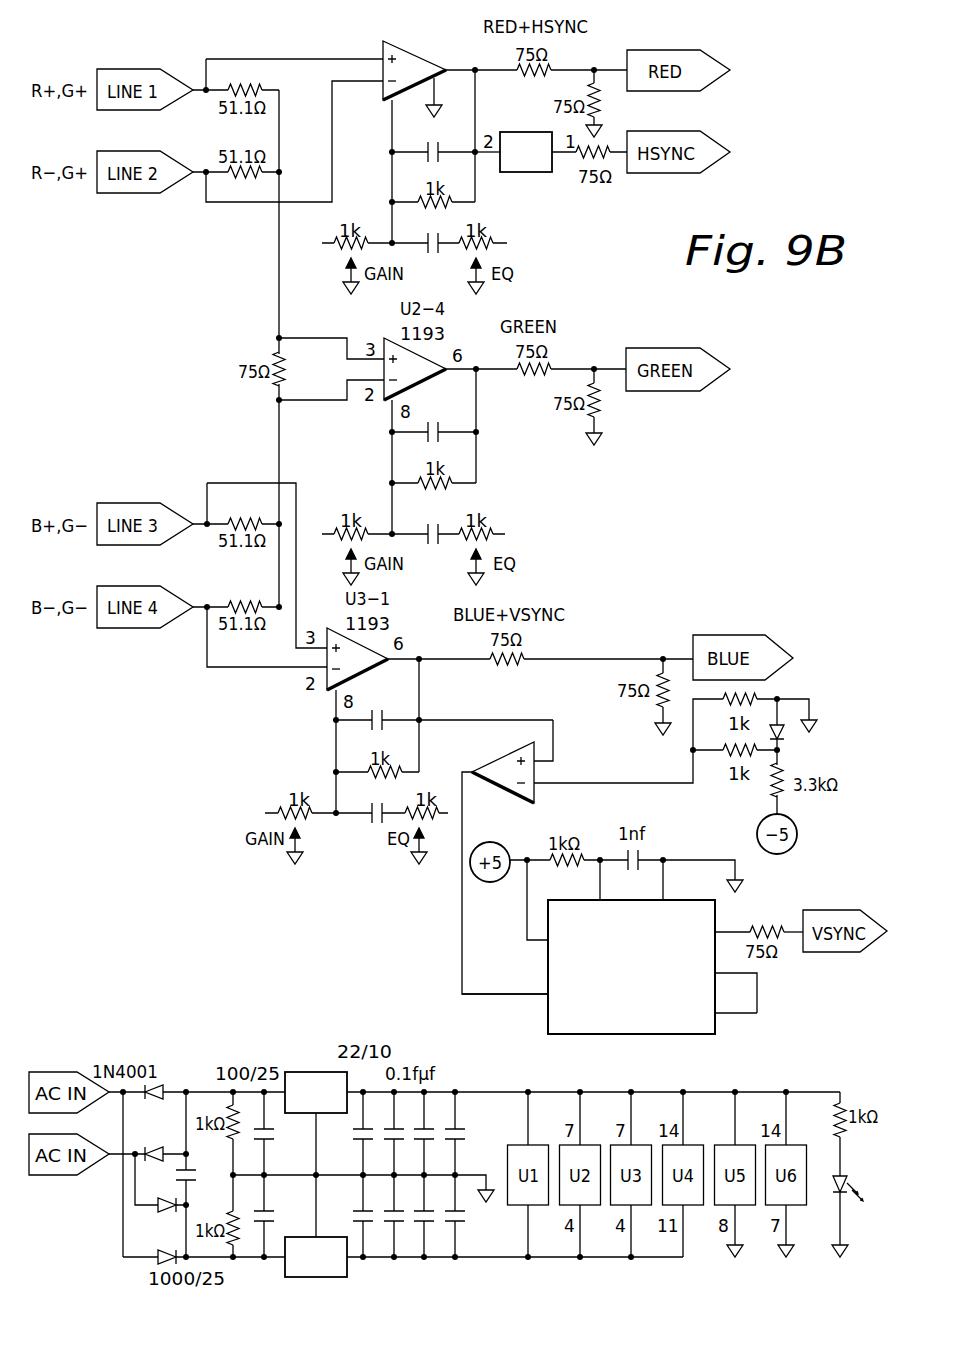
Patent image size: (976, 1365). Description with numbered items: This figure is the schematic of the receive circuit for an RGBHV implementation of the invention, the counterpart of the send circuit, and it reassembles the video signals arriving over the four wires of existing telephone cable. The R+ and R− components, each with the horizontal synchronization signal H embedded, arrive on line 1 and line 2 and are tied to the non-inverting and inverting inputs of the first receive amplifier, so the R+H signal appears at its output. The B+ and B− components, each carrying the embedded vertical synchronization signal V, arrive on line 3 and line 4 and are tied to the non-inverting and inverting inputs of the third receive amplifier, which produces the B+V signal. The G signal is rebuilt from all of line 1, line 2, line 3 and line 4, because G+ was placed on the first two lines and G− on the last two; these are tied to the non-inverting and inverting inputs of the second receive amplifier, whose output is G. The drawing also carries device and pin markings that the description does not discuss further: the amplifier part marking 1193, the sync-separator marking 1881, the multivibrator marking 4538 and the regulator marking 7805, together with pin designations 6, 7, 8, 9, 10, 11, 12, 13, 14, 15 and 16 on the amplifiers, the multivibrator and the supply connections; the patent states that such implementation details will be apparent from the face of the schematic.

The video amplifier (CLC1193) 1193 is at (414, 50).
The sync separator 1881 is at (513, 152).
The monostable multivibrator U5 4538 is at (631, 967).
The voltage regulator 7805 is at (316, 1174).
The line 1 is at (441, 97).
The line 2 is at (294, 141).
The line 3 is at (294, 51).
The output pin 6 is at (481, 59).
The feedback pin 8 is at (401, 171).
The U5 /Q1 output pin 9 is at (736, 981).
The U5 Q1 output pin 10 is at (732, 921).
The U5 B input pin 11 is at (736, 1001).
The U5 A input pin 12 is at (505, 984).
The U5 RSET pin 13 is at (525, 901).
The U5 RC pin 14 is at (613, 880).
The U5 CT pin 15 is at (676, 880).
The U5 supply pin 16 is at (721, 1118).
The supply pin 7 is at (520, 1118).
The line 4 is at (520, 1231).